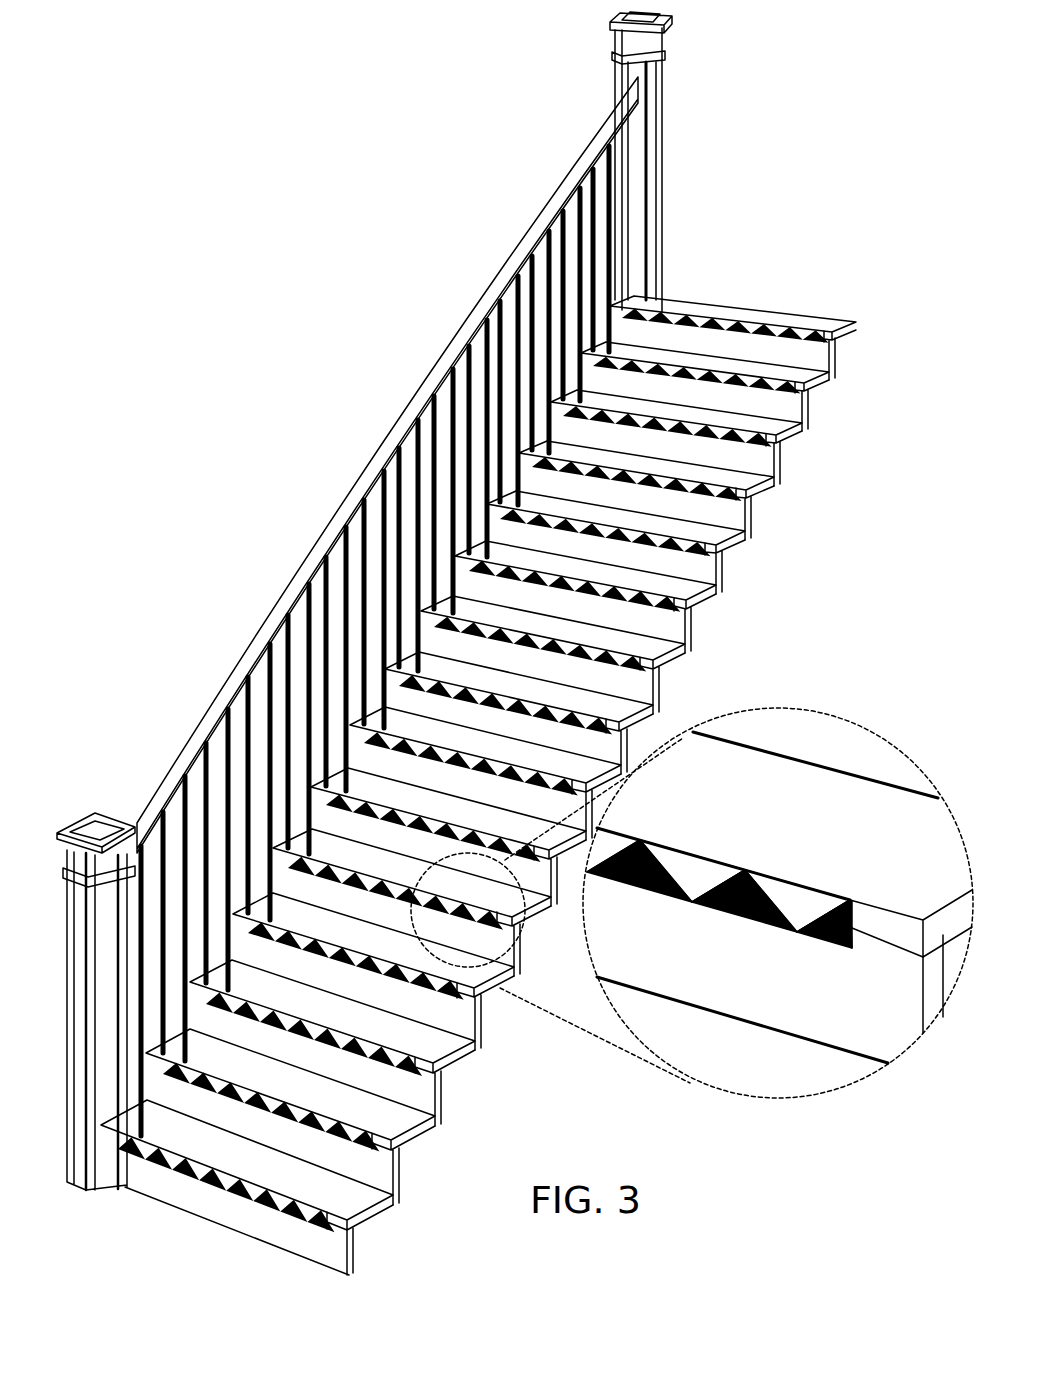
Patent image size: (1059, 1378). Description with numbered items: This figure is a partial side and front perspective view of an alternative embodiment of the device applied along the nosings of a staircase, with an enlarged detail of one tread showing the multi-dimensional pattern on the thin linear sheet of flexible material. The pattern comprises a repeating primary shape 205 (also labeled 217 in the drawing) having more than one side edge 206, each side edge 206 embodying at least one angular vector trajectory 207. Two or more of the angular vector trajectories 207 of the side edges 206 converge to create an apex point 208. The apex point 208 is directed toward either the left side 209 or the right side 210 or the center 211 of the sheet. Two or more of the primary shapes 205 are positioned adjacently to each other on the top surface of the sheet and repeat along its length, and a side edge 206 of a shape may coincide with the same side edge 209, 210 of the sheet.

The primary shape 205 is at (796, 905).
The nosing strip (struck reference) 217 is at (909, 611).
The side edge 206 is at (715, 887).
The angular vector trajectory 207 is at (828, 930).
The apex point 208 is at (797, 930).
The left side 209 is at (820, 940).
The right side 210 is at (810, 913).
The center 211 is at (815, 912).